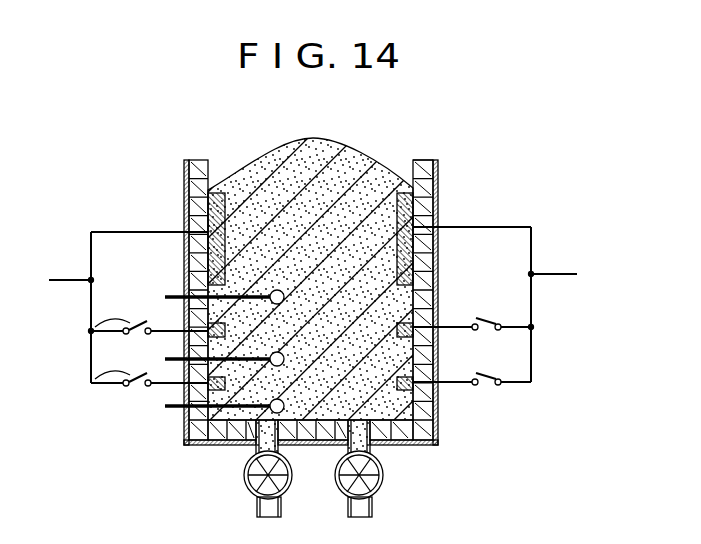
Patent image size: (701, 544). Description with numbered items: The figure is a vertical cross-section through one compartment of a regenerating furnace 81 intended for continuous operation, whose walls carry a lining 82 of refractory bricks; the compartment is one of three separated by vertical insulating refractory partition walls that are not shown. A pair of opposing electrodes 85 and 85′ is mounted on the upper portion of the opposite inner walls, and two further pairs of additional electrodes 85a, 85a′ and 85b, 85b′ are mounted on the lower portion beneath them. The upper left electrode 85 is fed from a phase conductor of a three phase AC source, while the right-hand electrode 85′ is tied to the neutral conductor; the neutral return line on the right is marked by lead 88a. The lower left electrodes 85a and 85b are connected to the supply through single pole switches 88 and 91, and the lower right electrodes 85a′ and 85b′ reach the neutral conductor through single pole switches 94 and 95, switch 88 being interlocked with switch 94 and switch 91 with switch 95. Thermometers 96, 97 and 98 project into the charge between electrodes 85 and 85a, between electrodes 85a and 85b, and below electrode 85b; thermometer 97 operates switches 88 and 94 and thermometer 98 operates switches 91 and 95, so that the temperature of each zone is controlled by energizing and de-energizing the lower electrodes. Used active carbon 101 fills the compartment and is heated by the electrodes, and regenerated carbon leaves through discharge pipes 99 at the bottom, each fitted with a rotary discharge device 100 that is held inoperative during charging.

The furnace 81 is at (438, 166).
The lining 82 is at (421, 166).
The electrode 85 is at (208, 207).
The electrode 85′ is at (433, 205).
The additional electrode 85a is at (200, 326).
The additional electrode 85a′ is at (437, 306).
The additional electrode 85b is at (172, 396).
The additional electrode 85b′ is at (437, 394).
The single pole switch 88 is at (91, 331).
The power lead 88a is at (563, 272).
The single pole switch 91 is at (91, 383).
The single pole switch 94 is at (486, 331).
The single pole switch 95 is at (486, 386).
The thermometer 96 is at (173, 295).
The thermometer 97 is at (166, 358).
The thermometer 98 is at (176, 410).
The discharge pipe 99 is at (346, 455).
The rotary discharge device 100 is at (340, 488).
The used active carbon 101 is at (281, 157).